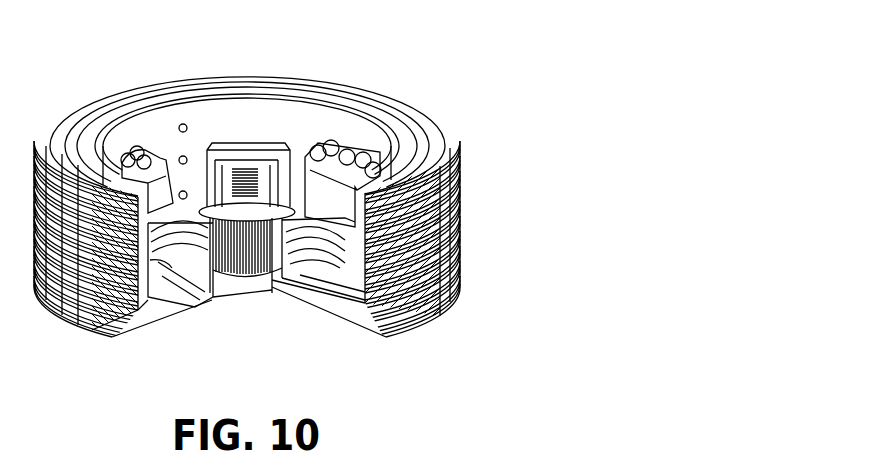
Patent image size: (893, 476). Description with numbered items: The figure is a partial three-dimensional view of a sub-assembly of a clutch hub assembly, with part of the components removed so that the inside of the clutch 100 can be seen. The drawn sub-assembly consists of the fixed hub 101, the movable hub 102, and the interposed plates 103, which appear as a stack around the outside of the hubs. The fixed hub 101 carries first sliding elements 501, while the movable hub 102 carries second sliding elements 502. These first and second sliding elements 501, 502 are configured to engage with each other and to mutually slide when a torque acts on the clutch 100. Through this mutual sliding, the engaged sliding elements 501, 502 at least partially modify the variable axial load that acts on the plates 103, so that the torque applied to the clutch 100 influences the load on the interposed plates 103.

The clutch 100 is at (449, 57).
The fixed hub 101 is at (352, 316).
The movable hub 102 is at (417, 148).
The plates 103 is at (447, 239).
The first sliding elements 501 is at (318, 146).
The second sliding elements 502 is at (318, 146).